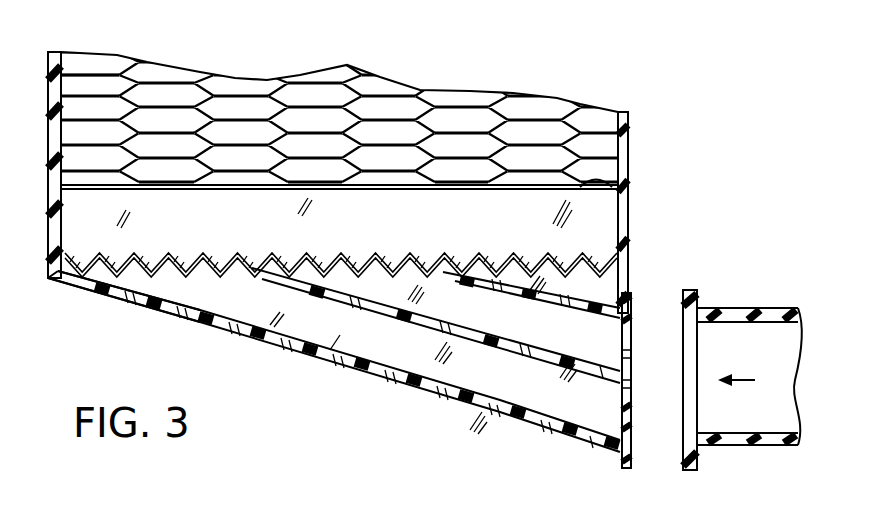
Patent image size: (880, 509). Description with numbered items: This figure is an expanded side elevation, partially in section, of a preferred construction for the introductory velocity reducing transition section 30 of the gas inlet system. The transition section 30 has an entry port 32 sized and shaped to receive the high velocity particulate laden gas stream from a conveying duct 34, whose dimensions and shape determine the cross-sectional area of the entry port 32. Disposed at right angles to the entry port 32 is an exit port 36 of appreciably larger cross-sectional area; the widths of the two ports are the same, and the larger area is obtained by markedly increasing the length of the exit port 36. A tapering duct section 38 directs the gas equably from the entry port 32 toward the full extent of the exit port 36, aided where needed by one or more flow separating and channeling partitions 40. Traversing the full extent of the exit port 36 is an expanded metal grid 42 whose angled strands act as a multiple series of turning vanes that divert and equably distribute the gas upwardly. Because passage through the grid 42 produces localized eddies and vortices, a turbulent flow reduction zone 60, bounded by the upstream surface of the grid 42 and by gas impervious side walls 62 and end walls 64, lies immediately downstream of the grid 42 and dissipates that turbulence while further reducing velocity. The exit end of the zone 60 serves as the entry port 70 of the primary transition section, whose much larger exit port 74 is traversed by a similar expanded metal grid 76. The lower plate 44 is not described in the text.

The introductory velocity reducing transition section 30 is at (446, 414).
The entry port 32 is at (632, 323).
The conveying duct 34 is at (707, 308).
The exit port 36 is at (350, 241).
The tapering duct section 38 is at (343, 353).
The flow separating and channeling partition 40 is at (573, 308).
The expanded metal grid 42 is at (142, 250).
The bottom plate 44 is at (142, 305).
The turbulent flow reduction zone 60 is at (433, 226).
The side wall 62 is at (85, 203).
The end wall 64 is at (628, 236).
The entry port 70 is at (608, 178).
The exit port 74 is at (252, 141).
The expanded metal grid 76 is at (87, 97).